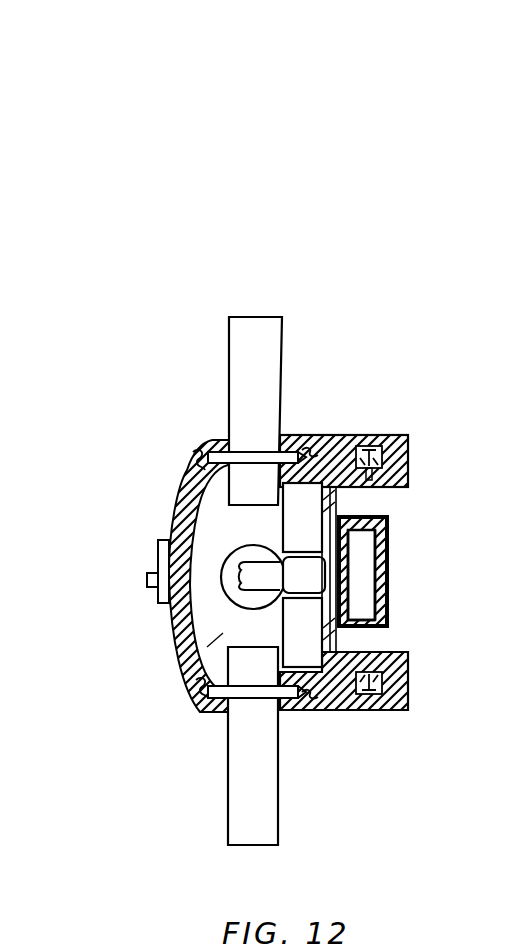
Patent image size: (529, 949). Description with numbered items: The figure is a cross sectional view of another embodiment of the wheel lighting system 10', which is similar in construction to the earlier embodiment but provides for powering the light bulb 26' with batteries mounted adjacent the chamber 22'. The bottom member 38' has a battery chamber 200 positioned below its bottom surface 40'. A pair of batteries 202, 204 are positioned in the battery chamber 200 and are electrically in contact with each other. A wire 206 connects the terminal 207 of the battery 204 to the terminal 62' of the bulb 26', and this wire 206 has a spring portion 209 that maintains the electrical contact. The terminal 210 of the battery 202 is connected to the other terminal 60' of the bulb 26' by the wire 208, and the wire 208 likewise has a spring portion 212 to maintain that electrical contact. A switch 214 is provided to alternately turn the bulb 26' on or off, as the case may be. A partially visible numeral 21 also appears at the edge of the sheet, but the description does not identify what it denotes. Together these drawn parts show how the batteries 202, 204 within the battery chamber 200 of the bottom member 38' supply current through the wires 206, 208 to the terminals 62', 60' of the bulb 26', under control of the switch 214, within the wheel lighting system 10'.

The wheel lighting system 10' is at (327, 136).
The chamber 22' is at (170, 612).
The light bulb 26' is at (166, 537).
The bottom member 38' is at (344, 730).
The bottom surface 40' is at (403, 583).
The terminal 60' is at (283, 581).
The terminal 62' is at (309, 510).
The battery chamber 200 is at (387, 565).
The battery 202 is at (387, 510).
The battery 204 is at (380, 543).
The wire 206 is at (385, 573).
The terminal 207 is at (383, 550).
The wire 208 is at (383, 607).
The spring portion 209 is at (361, 480).
The terminal 210 is at (385, 587).
The spring portion 212 is at (383, 622).
The switch 214 is at (147, 582).
The partial numeral 21 is at (518, 852).